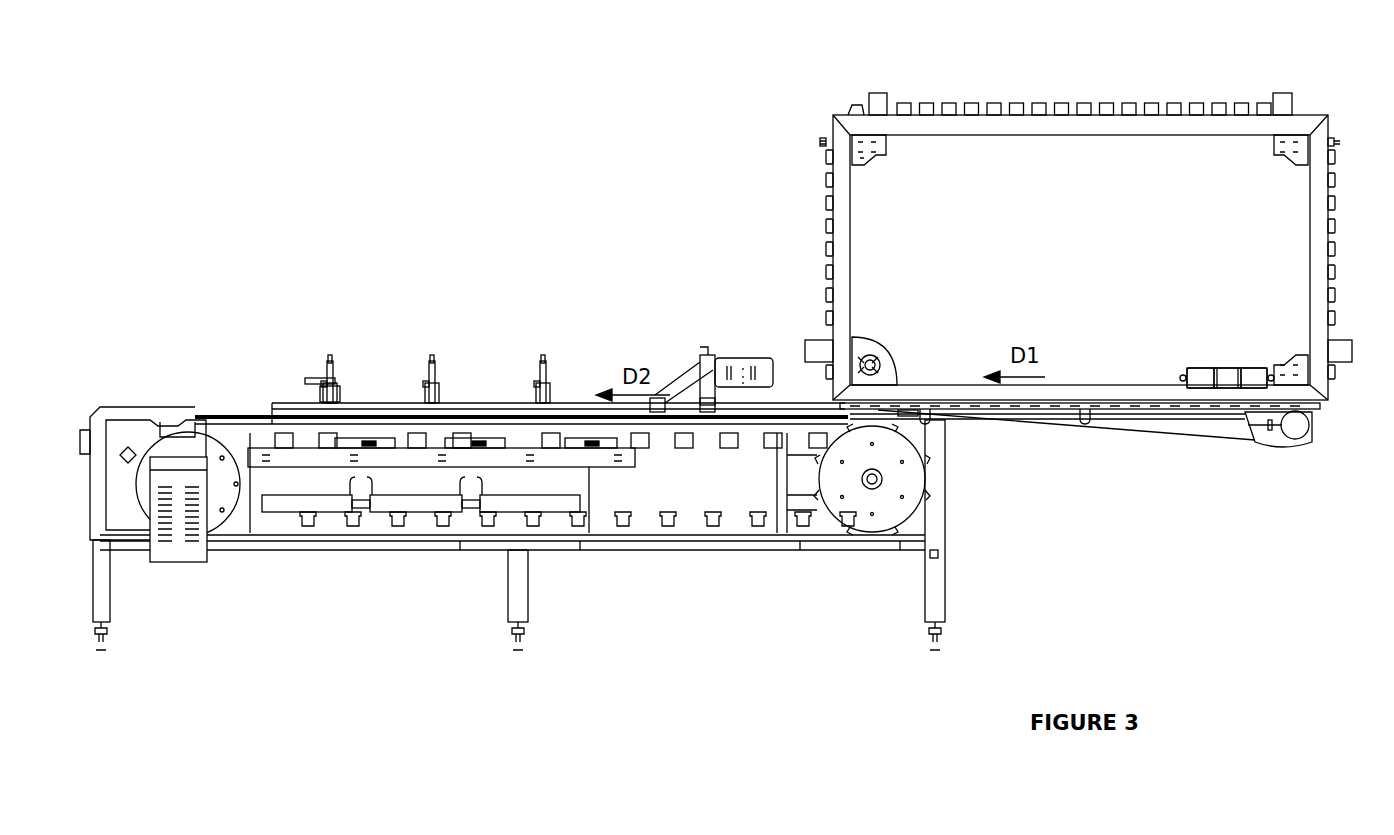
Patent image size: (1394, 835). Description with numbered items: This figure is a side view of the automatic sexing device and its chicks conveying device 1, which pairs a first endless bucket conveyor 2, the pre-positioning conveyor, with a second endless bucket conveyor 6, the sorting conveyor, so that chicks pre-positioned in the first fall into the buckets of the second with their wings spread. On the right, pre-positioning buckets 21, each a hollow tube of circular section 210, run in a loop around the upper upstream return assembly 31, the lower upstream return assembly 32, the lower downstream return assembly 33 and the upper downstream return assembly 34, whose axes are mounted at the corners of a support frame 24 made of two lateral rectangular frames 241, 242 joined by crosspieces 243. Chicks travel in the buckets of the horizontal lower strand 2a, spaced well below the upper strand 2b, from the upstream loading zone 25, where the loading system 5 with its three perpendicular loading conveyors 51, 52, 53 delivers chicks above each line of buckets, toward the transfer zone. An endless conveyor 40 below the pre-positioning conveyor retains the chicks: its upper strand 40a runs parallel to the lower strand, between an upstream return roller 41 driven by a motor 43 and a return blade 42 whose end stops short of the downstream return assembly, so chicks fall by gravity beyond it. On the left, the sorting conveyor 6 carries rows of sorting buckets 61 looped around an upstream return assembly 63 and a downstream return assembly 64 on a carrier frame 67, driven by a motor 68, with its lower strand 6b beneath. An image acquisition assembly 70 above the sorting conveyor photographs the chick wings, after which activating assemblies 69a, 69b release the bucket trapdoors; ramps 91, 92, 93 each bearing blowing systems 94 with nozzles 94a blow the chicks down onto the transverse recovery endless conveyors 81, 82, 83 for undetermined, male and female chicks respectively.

The chicks conveying device 1 is at (637, 332).
The first endless bucket conveyor 2 is at (1063, 100).
The lower strand 2a is at (1158, 410).
The upper strand 2b is at (1004, 102).
The pre-positioning buckets 21 is at (945, 104).
The hollow tube of circular section 210 is at (1128, 108).
The support frame 24 is at (1317, 249).
The lateral rectangular frame 241 is at (1203, 104).
The lateral rectangular frame 242 is at (828, 186).
The crosspieces 243 is at (875, 94).
The upstream loading zone 25 is at (1246, 330).
The upper upstream return assembly 31 is at (1295, 141).
The lower upstream return assembly 32 is at (1307, 376).
The lower downstream return assembly 33 is at (867, 359).
The upper downstream return assembly 34 is at (865, 146).
The endless conveyor 40 is at (1048, 422).
The upper strand 40a is at (1102, 420).
The upstream return roller 41 is at (1270, 440).
The return blade 42 is at (886, 411).
The motor 43 is at (1300, 438).
The loading system 5 is at (1226, 386).
The loading conveyor 51 is at (1188, 369).
The loading conveyor 52 is at (1226, 369).
The loading conveyor 53 is at (1252, 369).
The second endless bucket conveyor 6 is at (204, 414).
The lower strand 6b is at (689, 538).
The sorting buckets 61 is at (352, 516).
The upstream return assembly 63 is at (883, 520).
The downstream return assembly 64 is at (212, 508).
The carrier frame 67 is at (944, 586).
The motor 68 is at (180, 562).
The activating assembly 69a is at (384, 438).
The activating assembly 69b is at (482, 438).
The image acquisition assembly 70 is at (725, 360).
The first recovery endless conveyor 81 is at (548, 512).
The second recovery endless conveyor 82 is at (410, 512).
The third recovery endless conveyor 83 is at (284, 512).
The ramp 91 is at (541, 370).
The ramp 92 is at (436, 360).
The ramp 93 is at (308, 378).
The blowing system 94 is at (330, 358).
The nozzle 94a is at (338, 392).